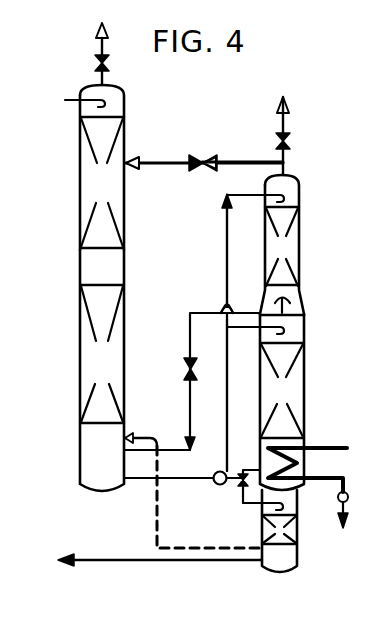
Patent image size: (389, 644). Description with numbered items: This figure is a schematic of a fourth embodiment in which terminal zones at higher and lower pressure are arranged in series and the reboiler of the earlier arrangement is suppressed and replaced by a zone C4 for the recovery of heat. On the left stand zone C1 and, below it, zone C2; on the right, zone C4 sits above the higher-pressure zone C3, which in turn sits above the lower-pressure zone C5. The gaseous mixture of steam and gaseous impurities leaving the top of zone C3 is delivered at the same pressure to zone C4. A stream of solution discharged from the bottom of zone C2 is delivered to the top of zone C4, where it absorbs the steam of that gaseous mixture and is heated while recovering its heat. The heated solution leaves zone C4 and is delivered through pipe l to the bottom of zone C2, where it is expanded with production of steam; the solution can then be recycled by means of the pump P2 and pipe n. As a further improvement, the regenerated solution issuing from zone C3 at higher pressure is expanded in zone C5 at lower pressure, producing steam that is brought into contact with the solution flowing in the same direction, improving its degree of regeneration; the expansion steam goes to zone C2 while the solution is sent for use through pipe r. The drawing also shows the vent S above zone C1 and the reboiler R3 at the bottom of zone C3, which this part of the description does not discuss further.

The first distillation column section C1 is at (94, 167).
The zone C2 is at (102, 370).
The zone C3 is at (265, 402).
The zone for the recovery of heat C4 is at (253, 205).
The zone C5 is at (270, 531).
The vent / overhead outlet with valve S is at (109, 54).
The pipe l is at (192, 381).
The pipe n is at (168, 487).
The pump P2 is at (234, 489).
The reboiler heating coil R3 is at (307, 458).
The pipe r is at (160, 499).